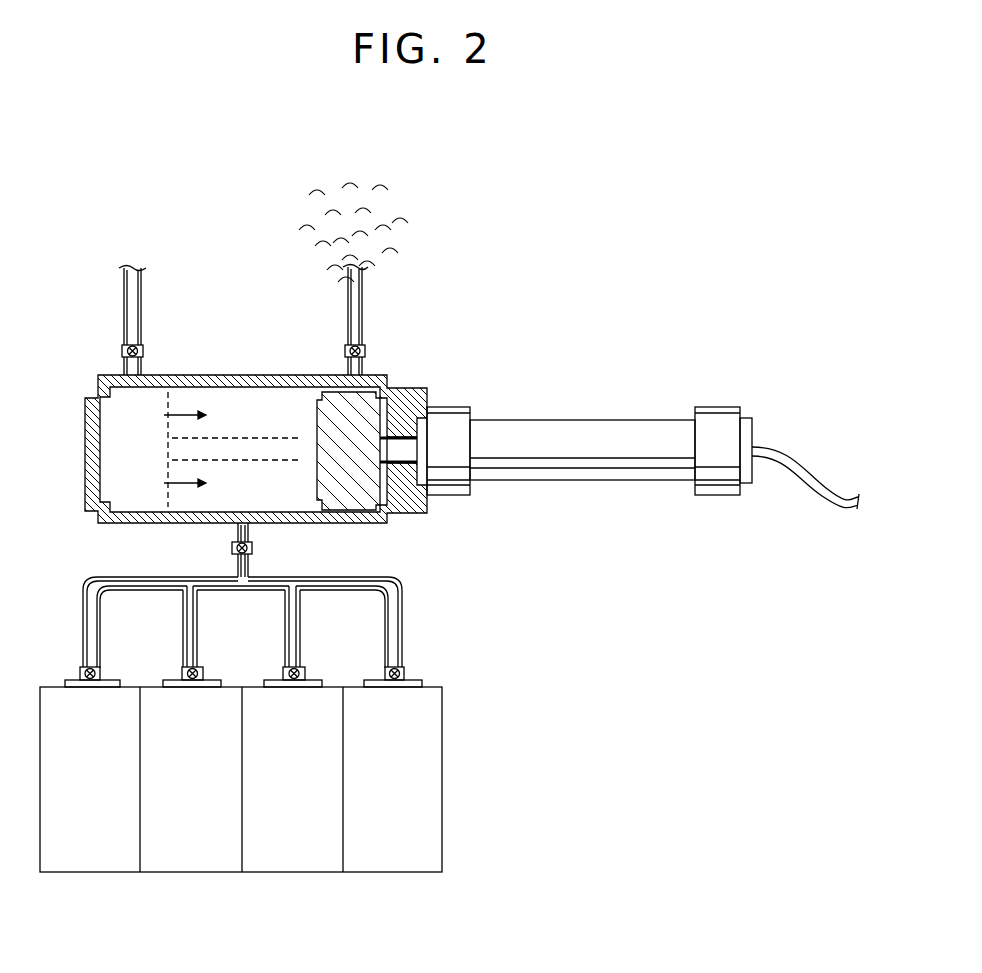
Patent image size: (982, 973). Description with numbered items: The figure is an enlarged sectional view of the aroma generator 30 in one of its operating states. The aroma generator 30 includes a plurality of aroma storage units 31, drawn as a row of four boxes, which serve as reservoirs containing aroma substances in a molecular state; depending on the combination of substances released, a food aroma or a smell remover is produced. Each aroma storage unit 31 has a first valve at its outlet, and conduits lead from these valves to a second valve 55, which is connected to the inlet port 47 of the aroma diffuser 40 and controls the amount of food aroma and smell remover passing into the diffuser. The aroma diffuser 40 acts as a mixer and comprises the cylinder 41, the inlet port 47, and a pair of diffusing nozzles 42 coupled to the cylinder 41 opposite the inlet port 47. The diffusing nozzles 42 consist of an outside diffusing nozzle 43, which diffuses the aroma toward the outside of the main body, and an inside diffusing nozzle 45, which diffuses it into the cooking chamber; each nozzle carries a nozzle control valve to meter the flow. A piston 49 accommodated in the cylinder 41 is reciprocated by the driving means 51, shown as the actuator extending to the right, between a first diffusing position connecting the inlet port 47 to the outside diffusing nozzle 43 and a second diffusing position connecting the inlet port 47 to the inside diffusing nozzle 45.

The aroma generator 30 is at (553, 565).
The aroma storage unit 31 is at (120, 737).
The aroma diffuser 40 is at (403, 521).
The cylinder 41 is at (268, 378).
The diffusing nozzles 42 is at (407, 290).
The outside diffusing nozzle 43 is at (141, 303).
The inside diffusing nozzle 45 is at (362, 303).
The inlet port 47 is at (246, 511).
The piston 49 is at (346, 512).
The driving means 51 is at (620, 422).
The second valve 55 is at (252, 548).